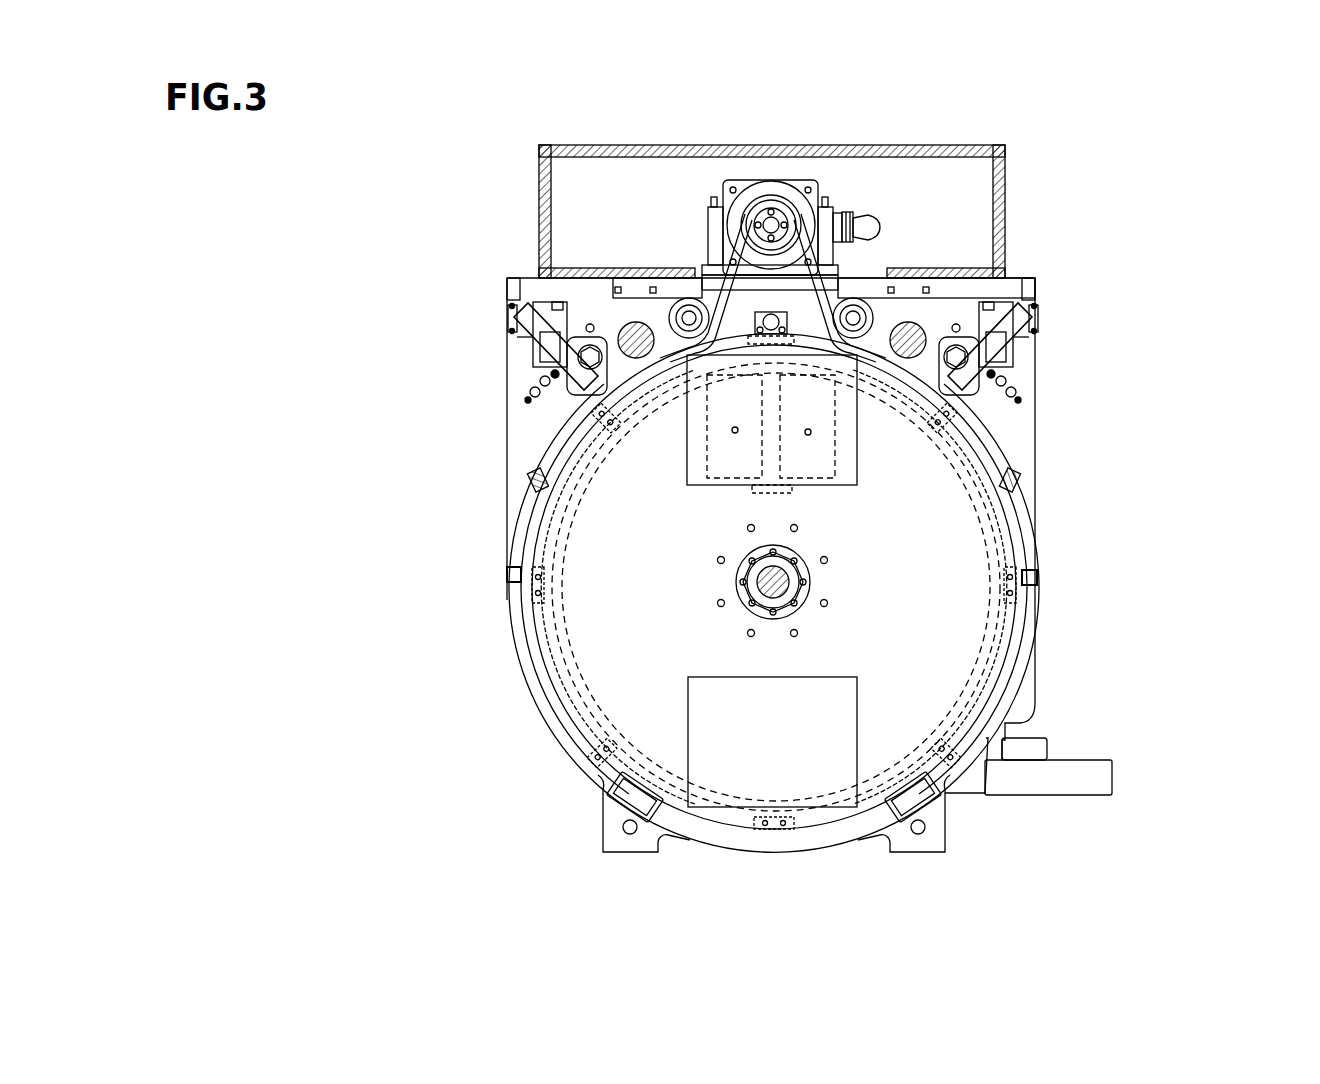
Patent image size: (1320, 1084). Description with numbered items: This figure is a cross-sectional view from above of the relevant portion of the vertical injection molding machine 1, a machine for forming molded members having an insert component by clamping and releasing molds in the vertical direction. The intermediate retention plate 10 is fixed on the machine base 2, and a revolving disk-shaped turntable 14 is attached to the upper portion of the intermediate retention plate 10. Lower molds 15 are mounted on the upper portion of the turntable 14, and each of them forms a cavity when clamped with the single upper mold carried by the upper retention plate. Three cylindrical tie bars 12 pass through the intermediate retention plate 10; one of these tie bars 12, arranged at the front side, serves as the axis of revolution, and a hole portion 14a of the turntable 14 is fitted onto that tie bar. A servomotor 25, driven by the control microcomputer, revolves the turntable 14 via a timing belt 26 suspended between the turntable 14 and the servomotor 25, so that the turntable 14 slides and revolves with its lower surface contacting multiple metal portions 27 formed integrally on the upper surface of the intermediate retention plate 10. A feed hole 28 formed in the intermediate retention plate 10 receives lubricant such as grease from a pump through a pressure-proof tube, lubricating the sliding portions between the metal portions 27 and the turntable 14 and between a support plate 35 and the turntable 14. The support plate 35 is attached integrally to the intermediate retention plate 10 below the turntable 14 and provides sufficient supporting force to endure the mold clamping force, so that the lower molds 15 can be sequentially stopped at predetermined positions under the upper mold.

The vertical injection molding machine 1 is at (1078, 415).
The machine base 2 is at (507, 360).
The intermediate retention plate 10 is at (982, 428).
The tie bars 12 is at (627, 333).
The turntable 14 is at (583, 601).
The hole portion 14a is at (808, 596).
The lower molds 15 is at (850, 450).
The servomotor 25 is at (783, 188).
The timing belt 26 is at (706, 280).
The metal portions 27 is at (880, 314).
The feed hole 28 is at (508, 574).
The support plate 35 is at (782, 472).